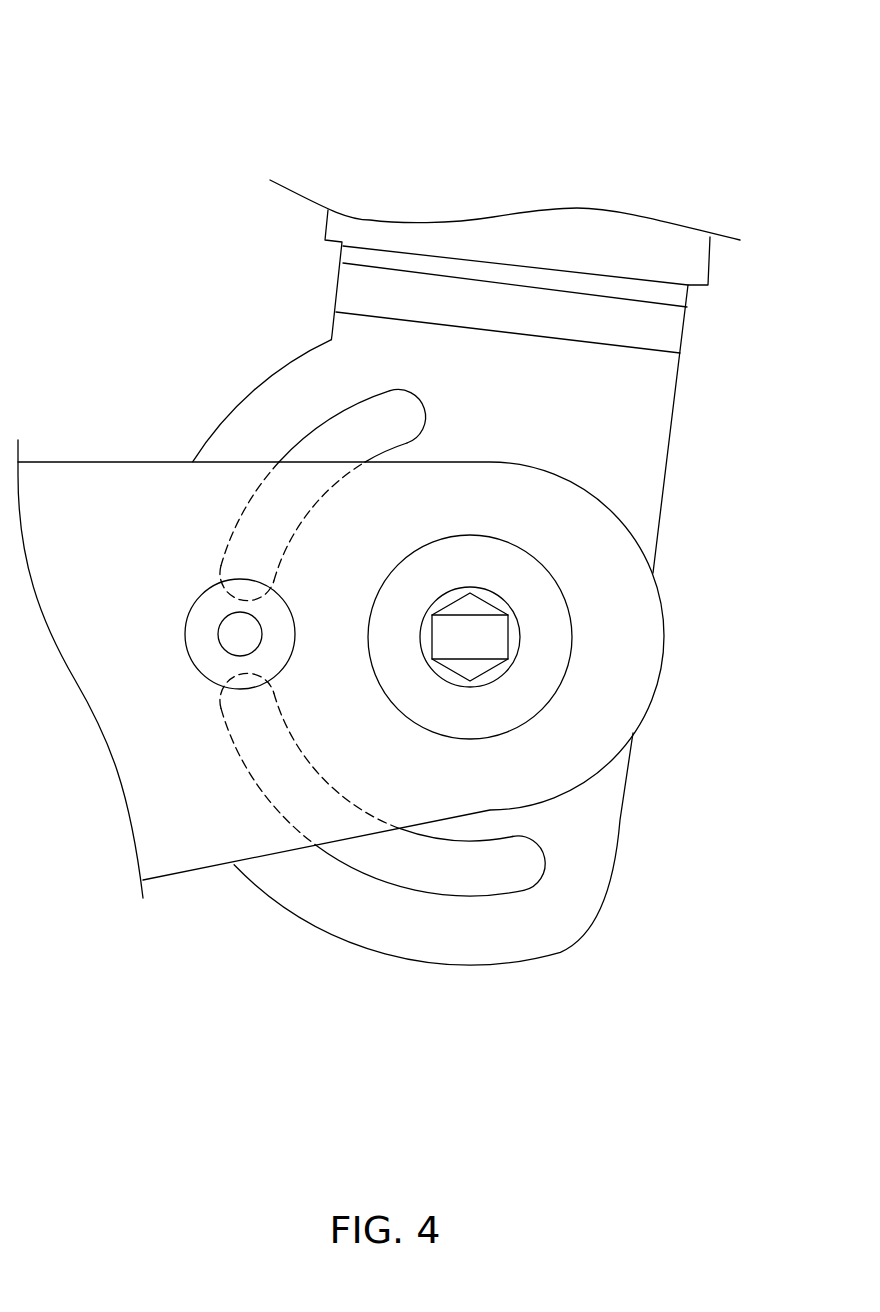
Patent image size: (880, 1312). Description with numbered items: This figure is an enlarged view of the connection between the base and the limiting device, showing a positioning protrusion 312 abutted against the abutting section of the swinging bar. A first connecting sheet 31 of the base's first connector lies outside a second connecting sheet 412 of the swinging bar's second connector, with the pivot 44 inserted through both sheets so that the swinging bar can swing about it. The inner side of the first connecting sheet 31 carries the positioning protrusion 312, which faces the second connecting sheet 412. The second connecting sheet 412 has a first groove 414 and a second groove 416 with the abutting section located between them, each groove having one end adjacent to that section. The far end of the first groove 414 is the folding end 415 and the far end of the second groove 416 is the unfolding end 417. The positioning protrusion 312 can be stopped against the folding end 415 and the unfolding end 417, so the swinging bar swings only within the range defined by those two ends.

The first connecting sheet 31 is at (107, 585).
The positioning protrusion 312 is at (208, 652).
The second connecting sheet 412 is at (666, 465).
The first groove 414 is at (337, 447).
The folding end 415 is at (415, 408).
The second groove 416 is at (397, 855).
The unfolding end 417 is at (532, 863).
The pivot 44 is at (543, 662).